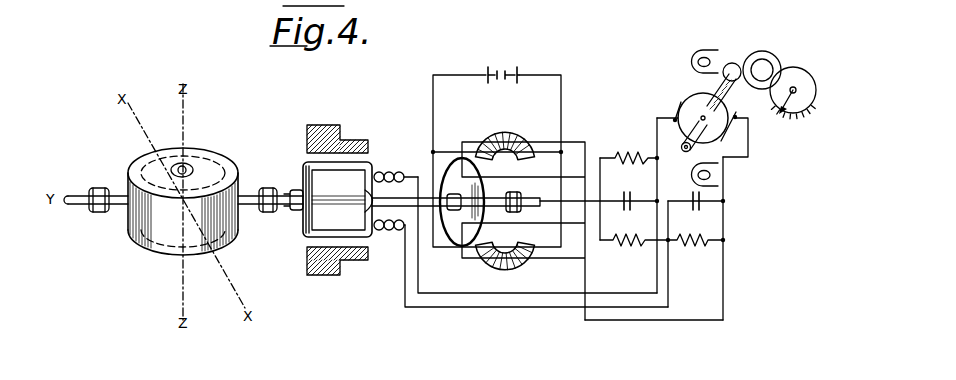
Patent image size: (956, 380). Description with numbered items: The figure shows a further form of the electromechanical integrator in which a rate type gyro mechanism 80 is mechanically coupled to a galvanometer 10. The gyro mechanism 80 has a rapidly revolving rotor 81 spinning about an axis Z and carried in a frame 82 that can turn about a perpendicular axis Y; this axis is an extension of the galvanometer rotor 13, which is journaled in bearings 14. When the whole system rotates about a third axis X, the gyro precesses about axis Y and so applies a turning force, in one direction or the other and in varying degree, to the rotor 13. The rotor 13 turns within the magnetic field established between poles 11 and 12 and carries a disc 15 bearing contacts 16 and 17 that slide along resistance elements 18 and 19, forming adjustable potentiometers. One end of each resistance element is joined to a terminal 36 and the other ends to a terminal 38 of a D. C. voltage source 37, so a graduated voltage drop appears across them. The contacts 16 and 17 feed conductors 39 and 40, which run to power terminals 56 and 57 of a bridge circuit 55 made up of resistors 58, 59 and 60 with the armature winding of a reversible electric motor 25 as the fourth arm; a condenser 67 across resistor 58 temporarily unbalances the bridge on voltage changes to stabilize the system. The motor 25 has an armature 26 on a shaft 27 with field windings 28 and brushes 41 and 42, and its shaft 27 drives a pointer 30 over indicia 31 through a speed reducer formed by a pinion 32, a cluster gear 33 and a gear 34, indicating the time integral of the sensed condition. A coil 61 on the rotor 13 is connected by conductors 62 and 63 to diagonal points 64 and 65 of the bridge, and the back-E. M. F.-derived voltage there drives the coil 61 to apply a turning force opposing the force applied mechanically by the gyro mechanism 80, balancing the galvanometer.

The galvanometer 10 is at (353, 219).
The pole 11 is at (359, 261).
The pole 12 is at (364, 140).
The rotor 13 is at (420, 172).
The bearings 14 is at (98, 187).
The disc 15 is at (487, 189).
The contact 16 is at (498, 262).
The contact 17 is at (504, 144).
The resistance element 18 is at (523, 266).
The resistance element 19 is at (511, 140).
The reversible electric motor 25 is at (706, 101).
The armature 26 is at (738, 122).
The shaft 27 is at (716, 92).
The field windings 28 is at (679, 95).
The pointer 30 is at (797, 118).
The indicia 31 is at (817, 130).
The pinion 32 is at (733, 62).
The cluster gear 33 is at (764, 50).
The gear 34 is at (798, 107).
The terminal 36 is at (486, 70).
The D. C. voltage source 37 is at (498, 68).
The terminal 38 is at (520, 72).
The conductor 39 is at (596, 322).
The conductor 40 is at (574, 176).
The brush 41 is at (740, 158).
The brush 42 is at (681, 101).
The bridge circuit 55 is at (619, 148).
The power terminal 56 is at (733, 243).
The power terminal 57 is at (599, 209).
The resistor 58 is at (696, 248).
The resistor 59 is at (626, 246).
The resistor 60 is at (616, 172).
The coil 61 is at (301, 234).
The conductor 62 is at (452, 309).
The conductor 63 is at (522, 295).
The diagonal point 64 is at (670, 246).
The diagonal point 65 is at (650, 156).
The condenser 67 is at (703, 208).
The rate type gyro mechanism 80 is at (189, 190).
The rotor 81 is at (214, 168).
The frame 82 is at (157, 244).